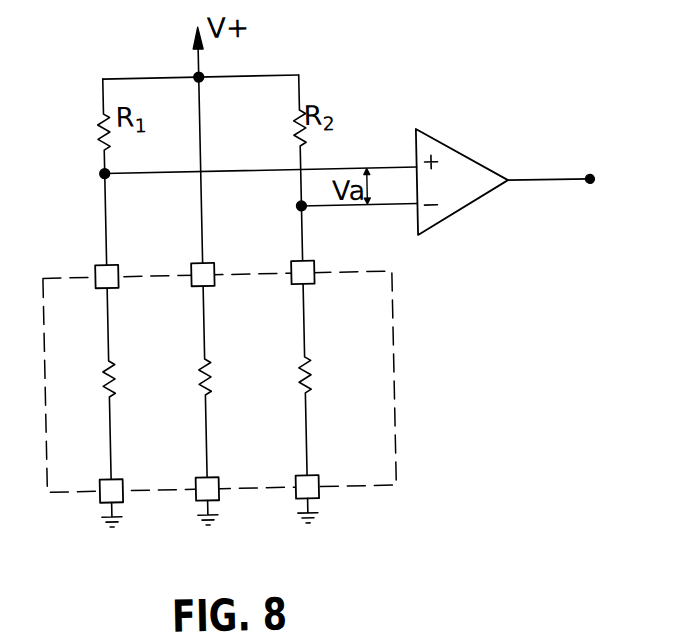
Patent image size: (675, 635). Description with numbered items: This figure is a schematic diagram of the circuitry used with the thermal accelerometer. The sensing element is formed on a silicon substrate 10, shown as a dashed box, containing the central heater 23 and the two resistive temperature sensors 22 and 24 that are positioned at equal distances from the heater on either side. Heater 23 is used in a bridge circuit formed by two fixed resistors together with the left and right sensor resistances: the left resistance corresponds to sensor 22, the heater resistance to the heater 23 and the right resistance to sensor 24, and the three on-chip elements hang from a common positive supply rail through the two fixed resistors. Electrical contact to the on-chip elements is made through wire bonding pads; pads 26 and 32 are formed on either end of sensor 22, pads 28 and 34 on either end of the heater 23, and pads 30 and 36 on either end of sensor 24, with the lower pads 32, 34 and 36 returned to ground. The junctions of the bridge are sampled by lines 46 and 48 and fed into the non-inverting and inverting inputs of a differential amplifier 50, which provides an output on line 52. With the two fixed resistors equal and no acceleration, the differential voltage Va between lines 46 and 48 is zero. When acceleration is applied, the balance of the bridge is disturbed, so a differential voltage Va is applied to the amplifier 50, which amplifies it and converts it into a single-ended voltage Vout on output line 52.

The silicon substrate 10 is at (391, 395).
The sensor 22 is at (104, 359).
The heater 23 is at (203, 359).
The sensor 24 is at (303, 359).
The wire bonding pad 26 is at (96, 264).
The wire bonding pad 28 is at (192, 266).
The wire bonding pad 30 is at (292, 265).
The wire bonding pad 32 is at (96, 493).
The wire bonding pad 34 is at (192, 495).
The wire bonding pad 36 is at (292, 497).
The line 46 is at (389, 170).
The line 48 is at (352, 206).
The differential amplifier 50 is at (472, 206).
The output line 52 is at (542, 184).